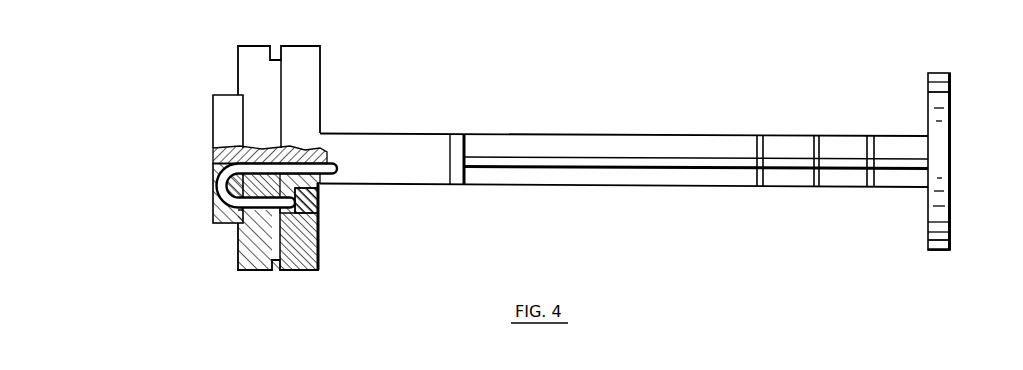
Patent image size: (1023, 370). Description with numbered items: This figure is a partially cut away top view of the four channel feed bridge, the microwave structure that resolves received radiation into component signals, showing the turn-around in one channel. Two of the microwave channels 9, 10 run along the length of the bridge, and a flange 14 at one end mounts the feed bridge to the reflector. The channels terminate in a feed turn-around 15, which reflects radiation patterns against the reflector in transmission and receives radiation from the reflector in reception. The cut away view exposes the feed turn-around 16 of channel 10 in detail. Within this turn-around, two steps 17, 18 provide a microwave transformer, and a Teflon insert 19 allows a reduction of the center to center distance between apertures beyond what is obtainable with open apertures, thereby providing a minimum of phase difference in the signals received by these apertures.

The microwave channel 9 is at (585, 143).
The microwave channel 10 is at (603, 175).
The flange 14 is at (952, 223).
The feed turn-around 15 is at (213, 88).
The feed turn-around 16 is at (228, 187).
The step 17 is at (323, 216).
The step 18 is at (323, 217).
The Teflon insert 19 is at (322, 200).